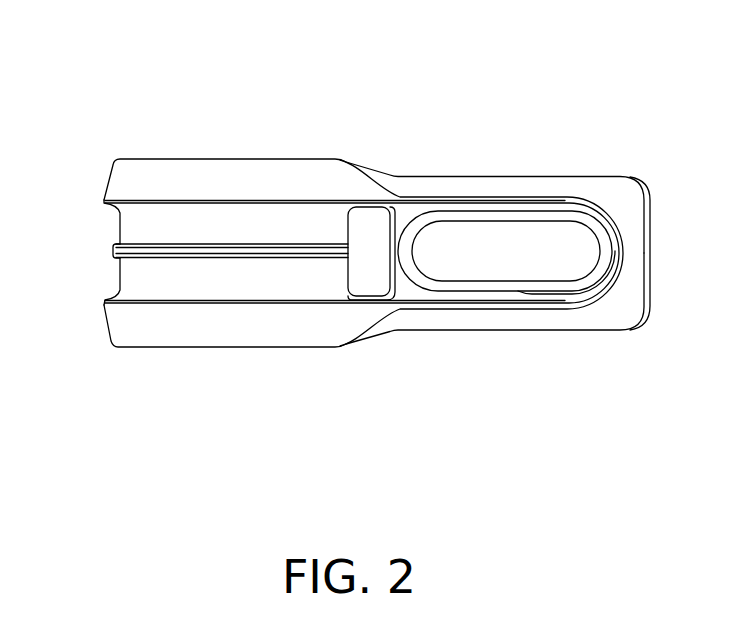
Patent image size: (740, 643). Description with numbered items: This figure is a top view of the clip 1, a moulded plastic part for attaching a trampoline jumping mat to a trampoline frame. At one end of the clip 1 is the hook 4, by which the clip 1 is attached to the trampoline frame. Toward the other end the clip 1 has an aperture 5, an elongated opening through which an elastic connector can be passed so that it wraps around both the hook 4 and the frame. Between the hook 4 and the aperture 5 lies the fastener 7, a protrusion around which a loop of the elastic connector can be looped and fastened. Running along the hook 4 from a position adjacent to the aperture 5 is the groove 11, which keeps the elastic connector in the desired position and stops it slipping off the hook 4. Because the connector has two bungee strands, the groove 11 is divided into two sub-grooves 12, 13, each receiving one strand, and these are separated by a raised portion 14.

The clip 1 is at (346, 201).
The hook 4 is at (224, 179).
The aperture 5 is at (375, 231).
The fastener 7 is at (521, 238).
The groove 11 is at (96, 250).
The sub-groove 12 is at (220, 285).
The sub-groove 13 is at (178, 228).
The raised portion 14 is at (148, 253).